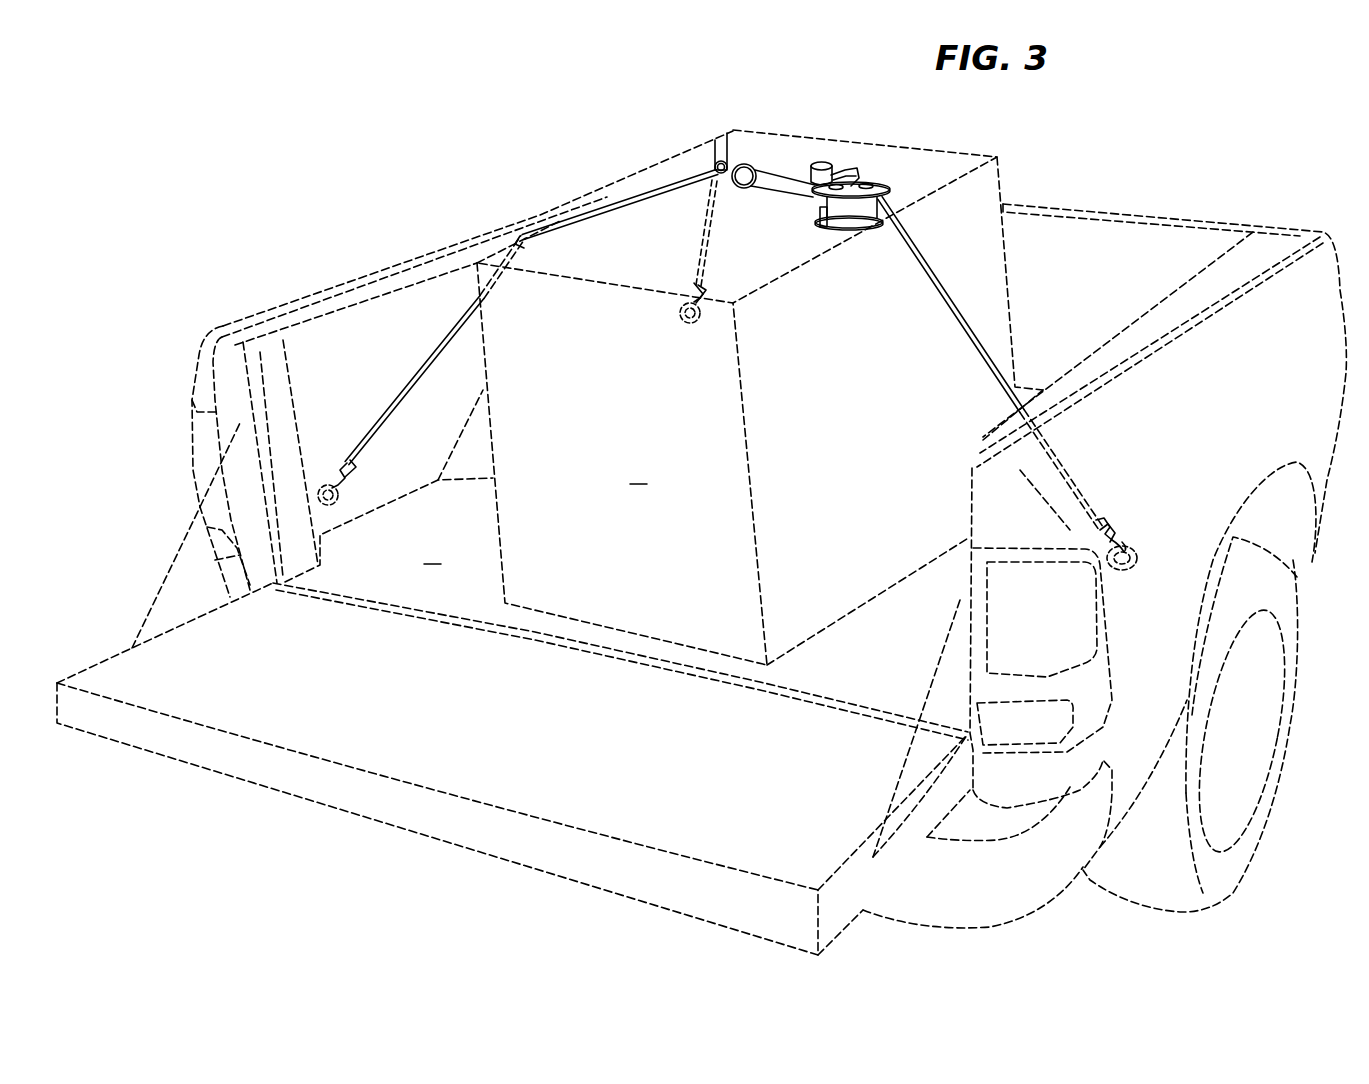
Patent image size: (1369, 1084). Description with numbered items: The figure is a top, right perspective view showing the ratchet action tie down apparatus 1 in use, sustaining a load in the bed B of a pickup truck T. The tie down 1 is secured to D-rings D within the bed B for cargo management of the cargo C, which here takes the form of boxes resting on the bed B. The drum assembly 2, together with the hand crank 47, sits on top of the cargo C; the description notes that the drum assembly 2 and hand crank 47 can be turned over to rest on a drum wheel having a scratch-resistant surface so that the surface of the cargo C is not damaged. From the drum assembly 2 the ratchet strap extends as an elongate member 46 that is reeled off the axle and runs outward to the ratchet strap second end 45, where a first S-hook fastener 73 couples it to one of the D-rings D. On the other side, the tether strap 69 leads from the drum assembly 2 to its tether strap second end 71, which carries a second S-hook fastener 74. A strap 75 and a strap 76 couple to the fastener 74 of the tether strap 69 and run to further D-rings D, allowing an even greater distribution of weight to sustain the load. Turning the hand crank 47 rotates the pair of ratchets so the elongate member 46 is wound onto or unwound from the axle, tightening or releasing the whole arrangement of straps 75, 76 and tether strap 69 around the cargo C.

The ratchet action tie down apparatus 1 is at (1062, 157).
The drum assembly 2 is at (867, 247).
The ratchet strap second end 45 is at (1108, 522).
The elongate member 46 is at (978, 340).
The hand crank 47 is at (807, 155).
The tether strap 69 is at (793, 196).
The tether strap second end 71 is at (740, 188).
The first S-hook fastener 73 is at (1128, 550).
The second S-hook fastener 74 is at (713, 170).
The strap 75 is at (708, 227).
The strap 76 is at (430, 358).
The pickup truck T is at (1182, 215).
The D-rings D is at (323, 480).
The bed B is at (432, 551).
The cargo C is at (638, 471).